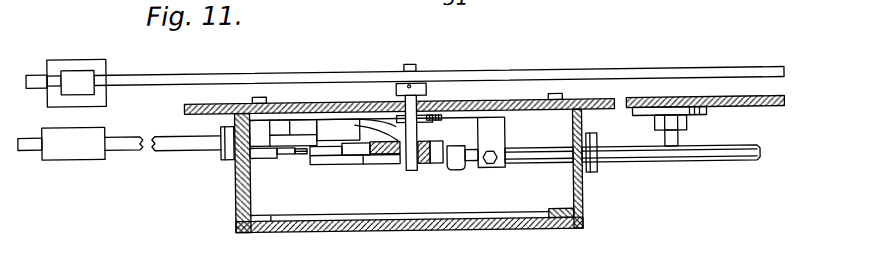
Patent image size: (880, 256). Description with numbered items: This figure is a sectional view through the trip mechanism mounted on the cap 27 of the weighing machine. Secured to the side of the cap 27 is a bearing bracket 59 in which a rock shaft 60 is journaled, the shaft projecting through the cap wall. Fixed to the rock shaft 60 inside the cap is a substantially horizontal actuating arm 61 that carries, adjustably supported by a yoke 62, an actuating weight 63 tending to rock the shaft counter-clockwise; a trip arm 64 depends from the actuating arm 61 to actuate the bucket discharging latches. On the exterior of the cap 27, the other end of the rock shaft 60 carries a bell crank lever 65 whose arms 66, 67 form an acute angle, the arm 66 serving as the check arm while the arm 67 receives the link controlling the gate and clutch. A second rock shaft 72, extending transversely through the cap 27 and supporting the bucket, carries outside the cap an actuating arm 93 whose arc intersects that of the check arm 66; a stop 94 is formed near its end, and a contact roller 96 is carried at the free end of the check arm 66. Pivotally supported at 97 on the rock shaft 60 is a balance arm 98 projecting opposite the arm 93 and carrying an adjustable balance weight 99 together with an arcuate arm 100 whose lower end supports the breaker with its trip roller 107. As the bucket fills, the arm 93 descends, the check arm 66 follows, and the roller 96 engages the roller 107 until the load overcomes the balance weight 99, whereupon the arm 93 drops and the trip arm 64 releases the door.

The cap 27 is at (708, 101).
The bearing bracket 59 is at (432, 123).
The rock shaft 60 is at (420, 90).
The actuating arm 61 is at (345, 74).
The yoke 62 is at (71, 73).
The actuating weight 63 is at (106, 93).
The trip arm 64 is at (558, 69).
The bell crank lever 65 is at (390, 167).
The check arm 66 is at (333, 154).
The arm 67 is at (380, 134).
The rock shaft 72 is at (679, 138).
The actuating arm 93 is at (635, 165).
The stop 94 is at (457, 158).
The contact roller 96 is at (308, 152).
The pivot 97 is at (287, 152).
The balance arm 98 is at (192, 140).
The balance weight 99 is at (67, 143).
The arcuate arm 100 is at (298, 152).
The trip roller 107 is at (363, 163).